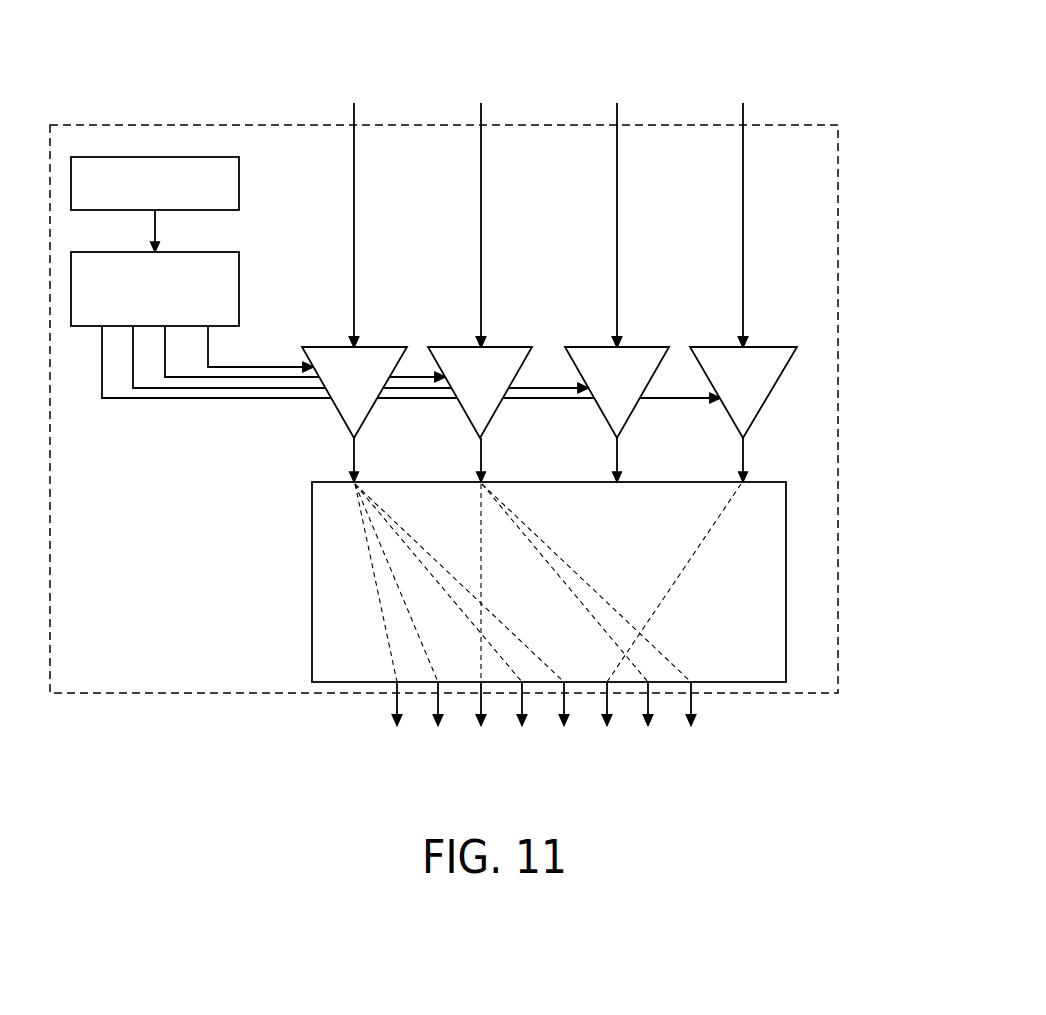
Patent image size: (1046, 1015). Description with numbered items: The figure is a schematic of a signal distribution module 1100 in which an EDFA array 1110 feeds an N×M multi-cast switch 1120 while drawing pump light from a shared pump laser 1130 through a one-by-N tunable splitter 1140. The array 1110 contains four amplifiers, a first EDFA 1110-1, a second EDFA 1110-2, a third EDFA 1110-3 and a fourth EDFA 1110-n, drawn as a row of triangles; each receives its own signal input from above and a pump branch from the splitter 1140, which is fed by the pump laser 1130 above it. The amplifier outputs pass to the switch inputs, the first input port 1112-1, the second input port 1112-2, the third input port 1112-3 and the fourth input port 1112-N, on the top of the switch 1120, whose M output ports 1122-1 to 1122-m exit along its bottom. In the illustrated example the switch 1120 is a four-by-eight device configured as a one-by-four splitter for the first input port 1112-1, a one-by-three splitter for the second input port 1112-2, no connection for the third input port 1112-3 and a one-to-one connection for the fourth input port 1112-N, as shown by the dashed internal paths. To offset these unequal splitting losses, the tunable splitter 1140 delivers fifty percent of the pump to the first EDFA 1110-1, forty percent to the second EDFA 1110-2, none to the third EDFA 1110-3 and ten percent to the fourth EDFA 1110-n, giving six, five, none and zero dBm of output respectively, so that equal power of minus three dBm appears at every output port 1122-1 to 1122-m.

The signal distribution module 1100 is at (785, 124).
The shared pump laser 1130 is at (239, 183).
The 1xN tunable splitter 1140 is at (239, 287).
The EDFA array 1110 is at (600, 356).
The EDFA 1 1110-1 is at (393, 345).
The EDFA 2 1110-2 is at (509, 345).
The EDFA 3 1110-3 is at (646, 345).
The EDFA 4 1110-n is at (773, 345).
The input port 1 1112-1 is at (354, 448).
The input port 2 1112-2 is at (481, 448).
The input port 3 1112-3 is at (617, 448).
The input port 4 1112-N is at (743, 448).
The N×M multi-cast switch 1120 is at (786, 588).
The output port 1122-1 is at (638, 726).
The output port 1122-m is at (691, 703).